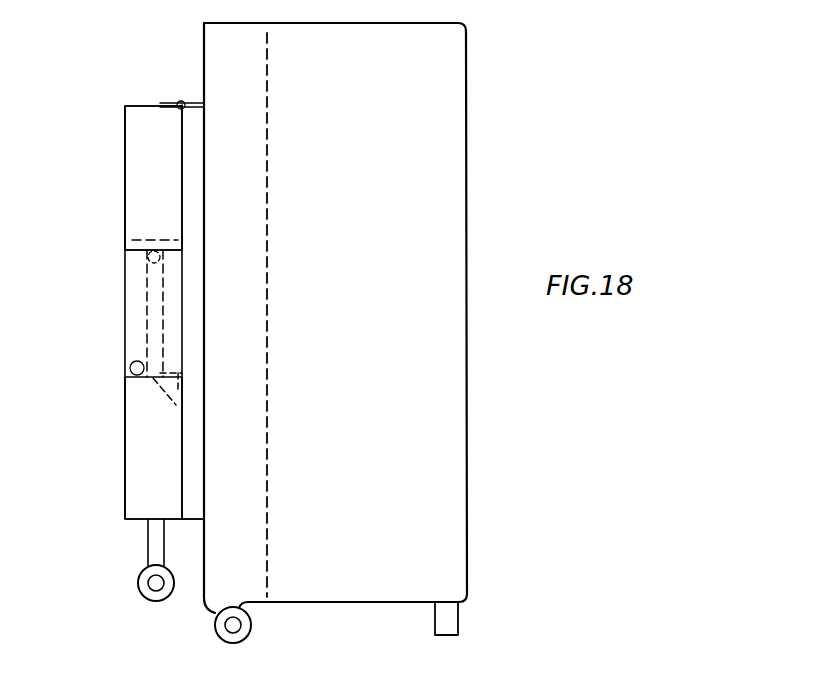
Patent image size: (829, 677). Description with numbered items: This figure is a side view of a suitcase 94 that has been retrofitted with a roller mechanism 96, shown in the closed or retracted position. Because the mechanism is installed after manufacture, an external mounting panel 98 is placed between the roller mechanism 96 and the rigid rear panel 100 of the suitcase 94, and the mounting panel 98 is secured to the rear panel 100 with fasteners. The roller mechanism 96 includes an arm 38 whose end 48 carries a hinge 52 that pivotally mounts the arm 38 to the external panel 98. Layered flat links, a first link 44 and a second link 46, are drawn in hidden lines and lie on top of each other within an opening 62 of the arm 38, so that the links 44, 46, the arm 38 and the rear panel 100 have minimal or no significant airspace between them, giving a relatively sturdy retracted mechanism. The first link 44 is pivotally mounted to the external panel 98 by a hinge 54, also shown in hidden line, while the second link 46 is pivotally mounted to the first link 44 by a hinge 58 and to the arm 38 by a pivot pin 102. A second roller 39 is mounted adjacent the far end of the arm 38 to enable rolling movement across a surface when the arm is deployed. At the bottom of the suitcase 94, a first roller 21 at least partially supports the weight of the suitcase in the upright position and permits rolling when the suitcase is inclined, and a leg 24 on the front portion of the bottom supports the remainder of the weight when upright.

The suitcase 94 is at (490, 439).
The rear panel 100 is at (203, 37).
The external mounting panel 98 is at (193, 140).
The roller mechanism 96 is at (110, 378).
The end of the arm 48 is at (140, 132).
The hinge 52 is at (179, 101).
The arm 38 is at (148, 468).
The second link 46 is at (135, 305).
The hinge 58 is at (162, 258).
The first link 44 is at (170, 300).
The hinge 54 is at (180, 373).
The opening 62 is at (142, 238).
The pivot pin 102 is at (131, 364).
The second roller 39 is at (145, 591).
The first roller 21 is at (222, 634).
The leg 24 is at (452, 618).